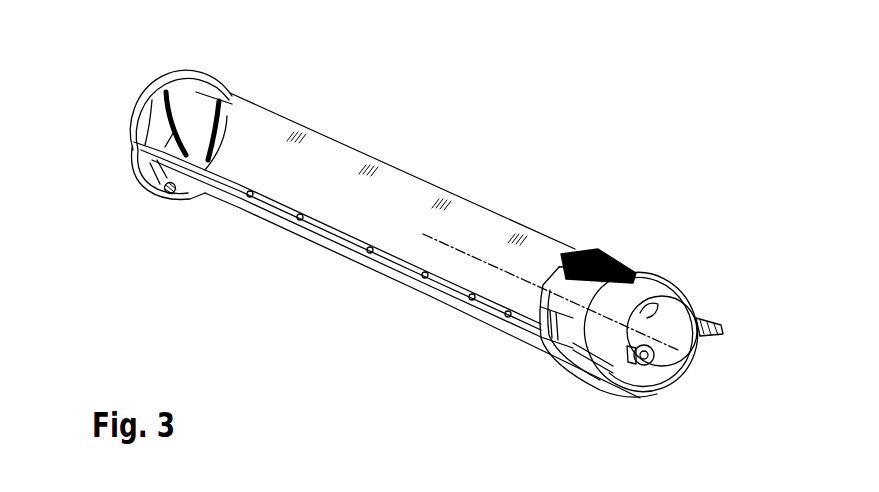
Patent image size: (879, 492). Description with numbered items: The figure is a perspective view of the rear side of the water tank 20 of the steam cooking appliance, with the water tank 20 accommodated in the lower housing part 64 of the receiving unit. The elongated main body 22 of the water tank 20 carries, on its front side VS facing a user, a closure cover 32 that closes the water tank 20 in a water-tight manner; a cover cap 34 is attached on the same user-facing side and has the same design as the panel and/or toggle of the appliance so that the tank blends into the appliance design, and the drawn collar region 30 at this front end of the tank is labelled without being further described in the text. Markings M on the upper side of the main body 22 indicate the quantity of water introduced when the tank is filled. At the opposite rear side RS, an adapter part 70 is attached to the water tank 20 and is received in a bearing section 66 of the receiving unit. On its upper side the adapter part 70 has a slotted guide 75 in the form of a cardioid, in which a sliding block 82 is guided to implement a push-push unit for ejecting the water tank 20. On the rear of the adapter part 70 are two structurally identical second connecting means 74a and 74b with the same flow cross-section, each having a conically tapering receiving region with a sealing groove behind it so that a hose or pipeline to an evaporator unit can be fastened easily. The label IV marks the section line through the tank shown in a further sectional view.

The water tank 20 is at (453, 190).
The main body 22 is at (340, 173).
The collar 30 is at (210, 76).
The closure cover 32 is at (158, 197).
The cover cap 34 is at (152, 100).
The lower housing part 64 is at (457, 293).
The bearing section 66 is at (577, 357).
The adapter part 70 is at (649, 270).
The second connecting means 74a is at (660, 300).
The second connecting means 74b is at (647, 368).
The slotted guide 75 is at (618, 258).
The sliding block 82 is at (590, 250).
The markings M is at (533, 232).
The front side VS is at (130, 135).
The rear side RS is at (702, 430).
The section line IV is at (430, 238).